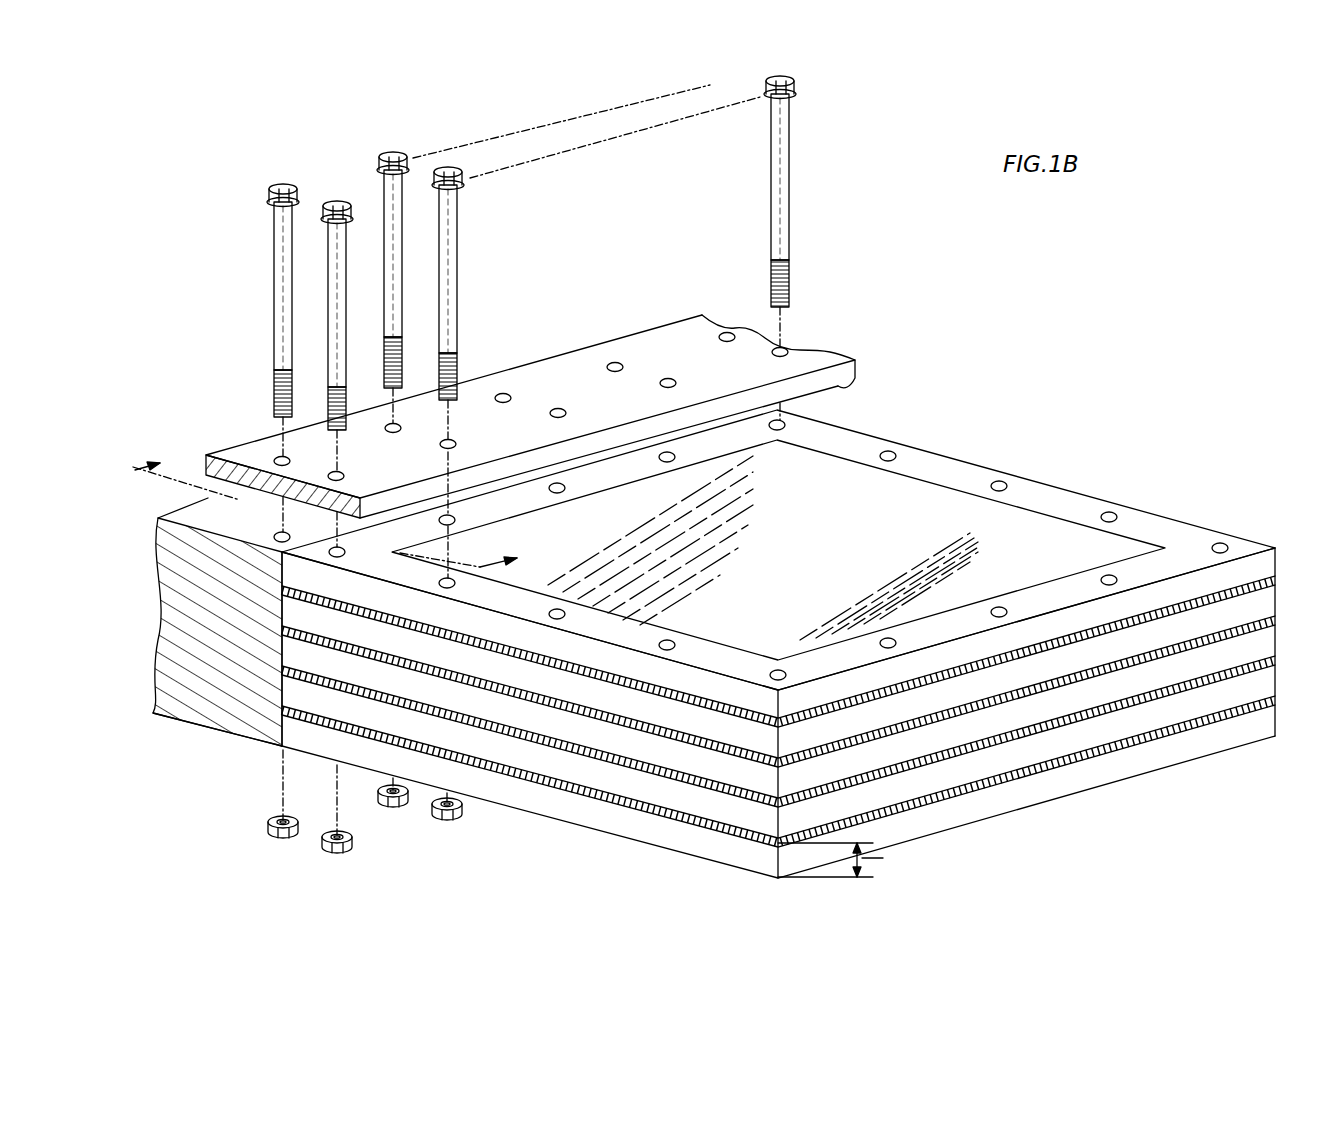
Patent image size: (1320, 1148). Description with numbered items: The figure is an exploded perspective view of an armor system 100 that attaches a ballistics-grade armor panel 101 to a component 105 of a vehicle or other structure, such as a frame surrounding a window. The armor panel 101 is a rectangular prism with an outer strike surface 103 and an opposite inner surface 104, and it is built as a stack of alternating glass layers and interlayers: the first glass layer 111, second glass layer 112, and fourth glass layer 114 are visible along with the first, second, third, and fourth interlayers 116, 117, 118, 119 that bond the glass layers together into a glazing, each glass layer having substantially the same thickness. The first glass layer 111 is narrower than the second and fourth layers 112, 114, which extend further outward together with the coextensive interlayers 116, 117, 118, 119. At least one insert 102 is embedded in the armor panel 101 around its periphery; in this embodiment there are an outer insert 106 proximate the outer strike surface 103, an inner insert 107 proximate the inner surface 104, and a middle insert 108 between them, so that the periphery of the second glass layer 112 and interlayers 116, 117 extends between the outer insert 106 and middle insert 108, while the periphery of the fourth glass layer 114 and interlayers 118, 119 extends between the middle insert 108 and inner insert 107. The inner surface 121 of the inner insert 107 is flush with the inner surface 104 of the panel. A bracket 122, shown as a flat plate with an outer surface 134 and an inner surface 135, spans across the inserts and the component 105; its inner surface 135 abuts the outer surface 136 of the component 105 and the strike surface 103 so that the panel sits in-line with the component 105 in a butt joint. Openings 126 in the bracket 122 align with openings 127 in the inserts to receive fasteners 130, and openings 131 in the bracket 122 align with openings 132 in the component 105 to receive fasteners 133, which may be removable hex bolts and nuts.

The armor system 100 is at (1082, 370).
The ballistics-grade armor panel 101 is at (1022, 518).
The insert 102 is at (847, 685).
The outer strike surface 103 is at (800, 548).
The inner surface 104 is at (1097, 795).
The component 105 is at (237, 713).
The outer insert 106 is at (1110, 607).
The inner insert 107 is at (1110, 765).
The middle insert 108 is at (1110, 687).
The first glass layer 111 is at (1053, 552).
The second glass layer 112 is at (1110, 648).
The fourth glass layer 114 is at (1110, 727).
The first interlayer 116 is at (1018, 656).
The second interlayer 117 is at (1018, 695).
The third interlayer 118 is at (1018, 735).
The fourth interlayer 119 is at (1018, 775).
The inner surface of the inner insert 121 is at (493, 795).
The bracket 122 is at (592, 326).
The opening 126 is at (340, 468).
The opening 127 is at (793, 423).
The fastener 130 is at (337, 388).
The opening 131 is at (278, 454).
The opening 132 is at (279, 537).
The fastener 133 is at (274, 372).
The outer surface 134 is at (242, 455).
The inner surface 135 is at (862, 388).
The outer surface 136 is at (204, 513).